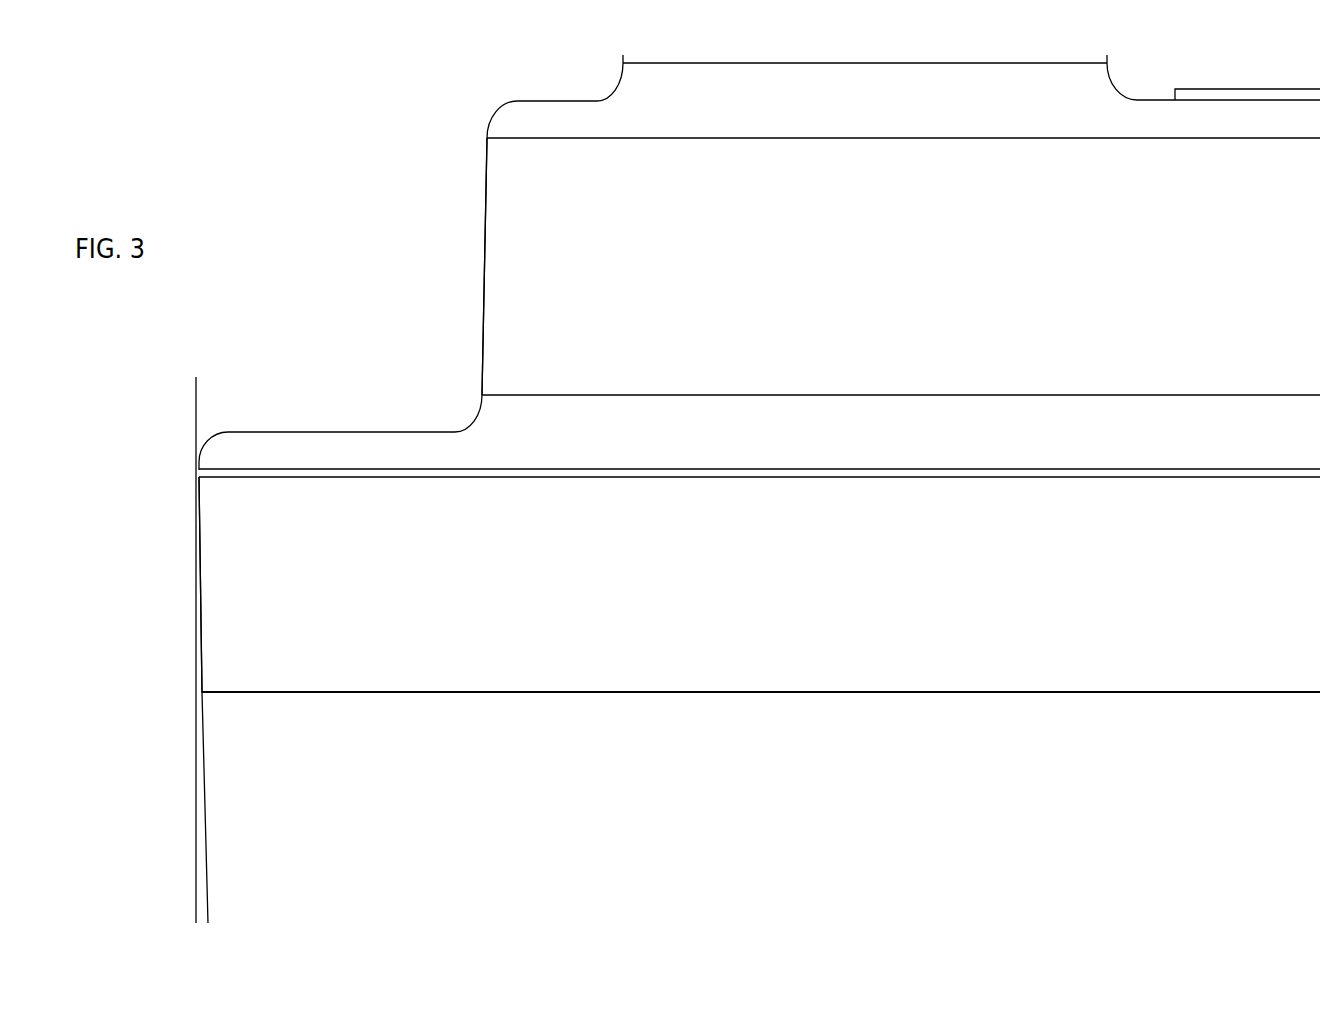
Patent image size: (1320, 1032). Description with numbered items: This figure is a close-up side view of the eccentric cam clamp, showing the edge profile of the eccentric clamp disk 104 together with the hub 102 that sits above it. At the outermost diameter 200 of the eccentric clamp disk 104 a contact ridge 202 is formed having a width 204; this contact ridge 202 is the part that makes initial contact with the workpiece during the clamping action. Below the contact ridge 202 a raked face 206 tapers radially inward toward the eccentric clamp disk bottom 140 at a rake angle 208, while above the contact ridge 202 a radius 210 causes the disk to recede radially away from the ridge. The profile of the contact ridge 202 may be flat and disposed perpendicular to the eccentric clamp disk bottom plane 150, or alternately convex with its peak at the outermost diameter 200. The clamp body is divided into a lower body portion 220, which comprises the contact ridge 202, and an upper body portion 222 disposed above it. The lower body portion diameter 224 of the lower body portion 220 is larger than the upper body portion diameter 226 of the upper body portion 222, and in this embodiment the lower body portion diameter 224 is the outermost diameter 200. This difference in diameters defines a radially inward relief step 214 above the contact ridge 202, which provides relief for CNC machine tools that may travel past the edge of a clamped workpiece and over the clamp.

The hub 102 is at (1257, 95).
The eccentric clamp disk 104 is at (771, 670).
The eccentric clamp disk bottom 140 is at (761, 732).
The eccentric clamp disk bottom plane 150 is at (593, 695).
The outermost diameter 200 is at (247, 621).
The lower body portion diameter 224 is at (255, 390).
The contact ridge 202 is at (662, 477).
The width 204 is at (427, 420).
The raked face 206 is at (207, 652).
The rake angle 208 is at (153, 860).
The radius 210 is at (222, 446).
The radially inward relief step 214 is at (366, 276).
The lower body portion 220 is at (995, 573).
The upper body portion 222 is at (995, 267).
The upper body portion diameter 226 is at (486, 297).